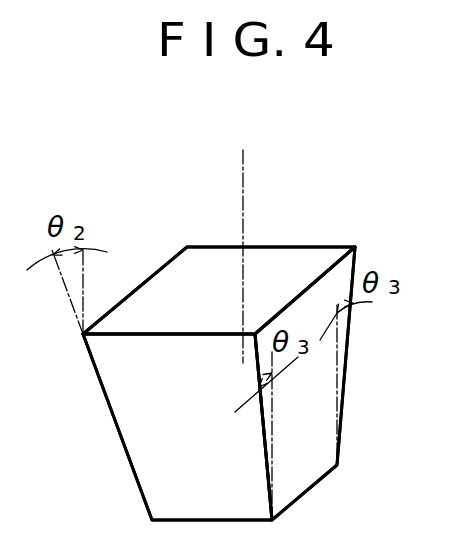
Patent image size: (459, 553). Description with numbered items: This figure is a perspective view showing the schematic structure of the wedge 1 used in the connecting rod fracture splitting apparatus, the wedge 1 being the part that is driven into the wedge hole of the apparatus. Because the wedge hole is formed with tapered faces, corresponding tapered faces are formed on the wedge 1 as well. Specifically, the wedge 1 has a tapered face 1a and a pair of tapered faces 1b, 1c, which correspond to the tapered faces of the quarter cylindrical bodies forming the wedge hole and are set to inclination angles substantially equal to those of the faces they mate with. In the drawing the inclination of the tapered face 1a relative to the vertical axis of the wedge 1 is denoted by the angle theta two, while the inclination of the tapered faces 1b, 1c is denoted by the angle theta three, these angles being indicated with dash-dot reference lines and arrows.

The wedge 1 is at (243, 180).
The tapered face 1a is at (146, 273).
The tapered face 1b is at (191, 441).
The tapered face 1c is at (346, 343).